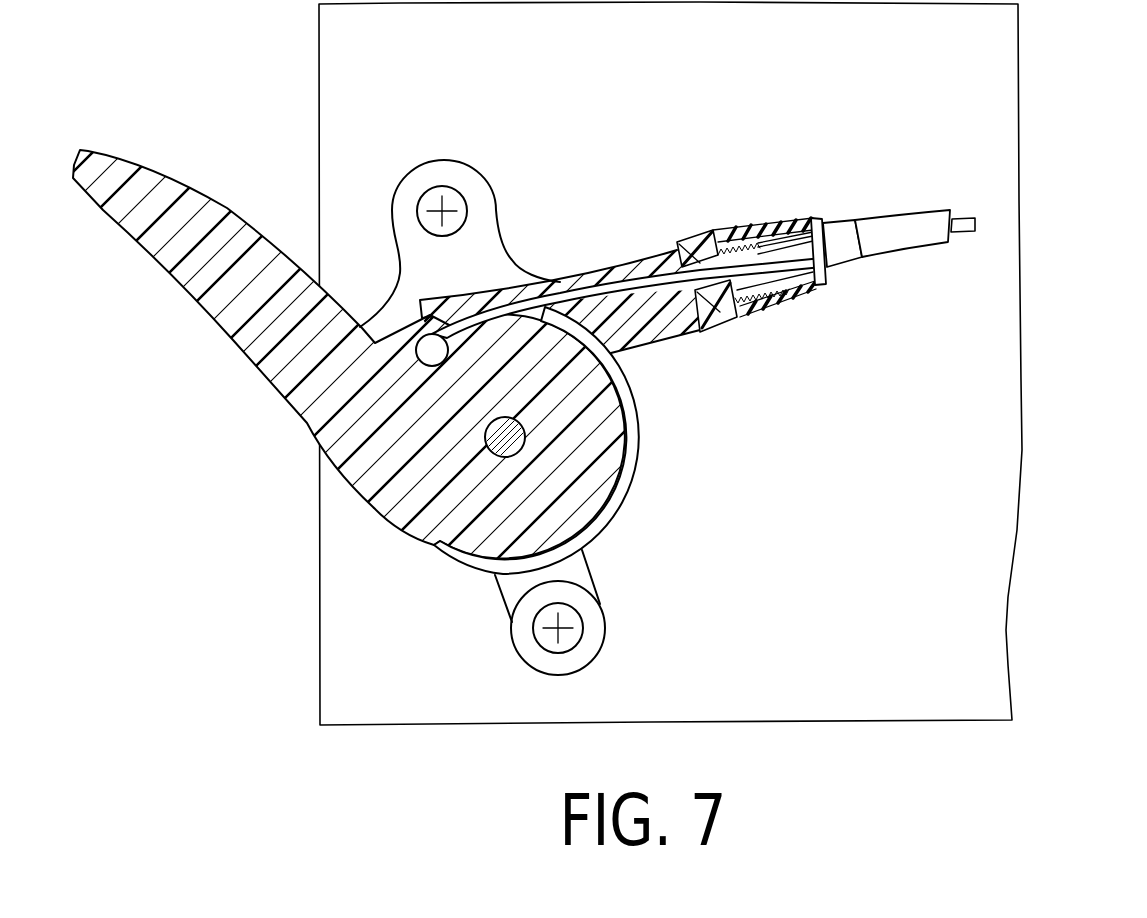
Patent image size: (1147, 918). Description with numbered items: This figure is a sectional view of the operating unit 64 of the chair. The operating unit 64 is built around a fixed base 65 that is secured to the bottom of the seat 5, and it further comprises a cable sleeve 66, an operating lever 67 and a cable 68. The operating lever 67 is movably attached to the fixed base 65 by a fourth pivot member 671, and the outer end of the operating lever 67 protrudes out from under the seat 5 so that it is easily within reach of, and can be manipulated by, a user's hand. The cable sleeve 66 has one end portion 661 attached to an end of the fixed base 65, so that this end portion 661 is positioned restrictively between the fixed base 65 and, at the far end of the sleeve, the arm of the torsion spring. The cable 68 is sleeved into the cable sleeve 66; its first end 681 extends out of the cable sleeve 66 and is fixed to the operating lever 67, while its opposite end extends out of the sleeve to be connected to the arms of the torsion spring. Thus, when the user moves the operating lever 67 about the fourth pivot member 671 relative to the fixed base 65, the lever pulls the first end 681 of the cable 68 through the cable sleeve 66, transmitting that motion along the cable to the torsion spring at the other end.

The seat 5 is at (355, 86).
The operating unit 64 is at (554, 392).
The fixed base 65 is at (513, 272).
The cable sleeve 66 is at (883, 228).
The end portion 661 is at (831, 233).
The operating lever 67 is at (276, 346).
The fourth pivot member 671 is at (523, 440).
The cable 68 is at (962, 232).
The first end 681 is at (468, 329).